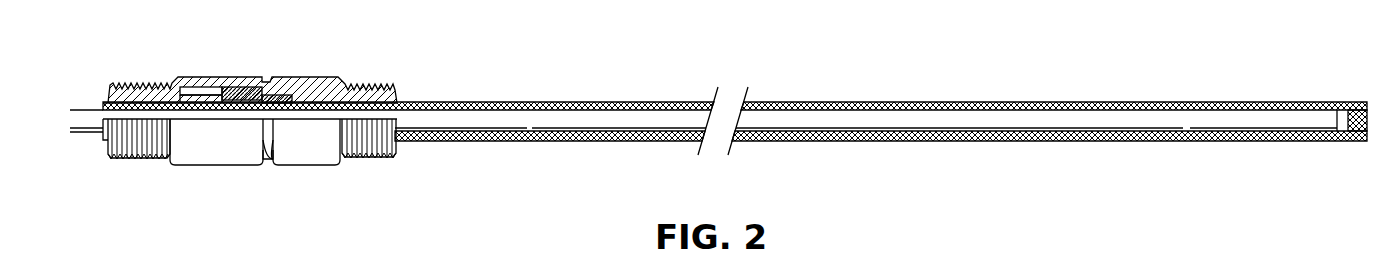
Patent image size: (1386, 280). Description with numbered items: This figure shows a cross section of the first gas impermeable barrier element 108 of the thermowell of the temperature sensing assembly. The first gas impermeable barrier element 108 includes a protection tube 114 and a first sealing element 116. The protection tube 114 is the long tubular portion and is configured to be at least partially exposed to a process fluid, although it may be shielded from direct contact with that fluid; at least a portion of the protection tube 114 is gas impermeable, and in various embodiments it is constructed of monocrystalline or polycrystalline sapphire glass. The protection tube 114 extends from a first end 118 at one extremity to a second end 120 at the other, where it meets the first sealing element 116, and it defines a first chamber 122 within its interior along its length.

The first gas impermeable barrier element 108 is at (498, 58).
The protection tube 114 is at (1188, 102).
The first sealing element 116 is at (308, 157).
The first end 118 is at (1354, 143).
The second end 120 is at (406, 149).
The first chamber 122 is at (961, 118).